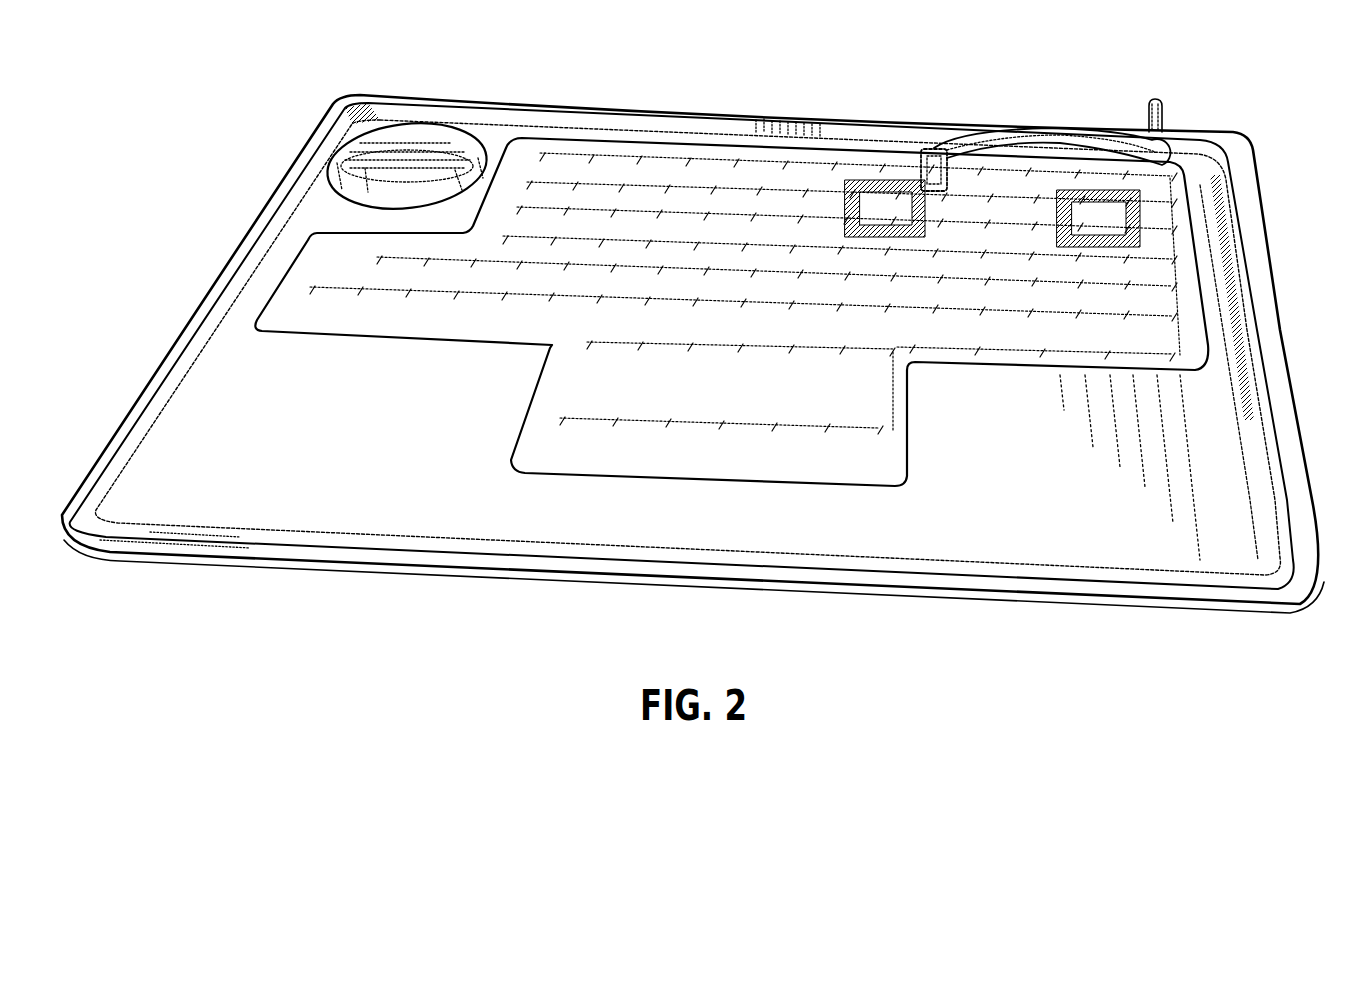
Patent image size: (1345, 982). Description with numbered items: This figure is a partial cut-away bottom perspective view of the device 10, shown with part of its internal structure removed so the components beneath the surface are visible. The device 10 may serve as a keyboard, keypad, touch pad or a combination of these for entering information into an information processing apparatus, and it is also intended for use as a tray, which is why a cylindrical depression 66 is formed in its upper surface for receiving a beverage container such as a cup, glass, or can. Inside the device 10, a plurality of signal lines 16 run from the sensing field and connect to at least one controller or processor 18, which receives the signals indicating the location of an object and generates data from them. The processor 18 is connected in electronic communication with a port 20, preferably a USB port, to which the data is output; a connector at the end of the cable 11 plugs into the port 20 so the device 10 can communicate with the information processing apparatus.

The device 10 is at (230, 156).
The cable 11 is at (1160, 99).
The signal lines 16 is at (943, 350).
The processor 18 is at (992, 213).
The port 20 is at (901, 150).
The cylindrical depression 66 is at (403, 135).